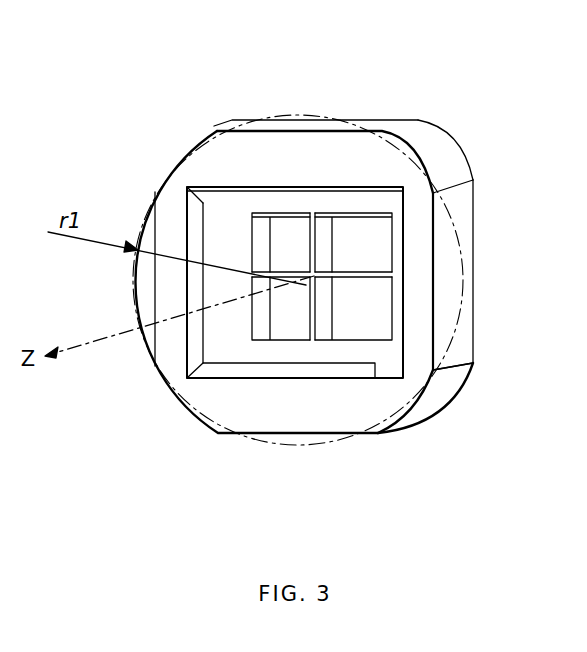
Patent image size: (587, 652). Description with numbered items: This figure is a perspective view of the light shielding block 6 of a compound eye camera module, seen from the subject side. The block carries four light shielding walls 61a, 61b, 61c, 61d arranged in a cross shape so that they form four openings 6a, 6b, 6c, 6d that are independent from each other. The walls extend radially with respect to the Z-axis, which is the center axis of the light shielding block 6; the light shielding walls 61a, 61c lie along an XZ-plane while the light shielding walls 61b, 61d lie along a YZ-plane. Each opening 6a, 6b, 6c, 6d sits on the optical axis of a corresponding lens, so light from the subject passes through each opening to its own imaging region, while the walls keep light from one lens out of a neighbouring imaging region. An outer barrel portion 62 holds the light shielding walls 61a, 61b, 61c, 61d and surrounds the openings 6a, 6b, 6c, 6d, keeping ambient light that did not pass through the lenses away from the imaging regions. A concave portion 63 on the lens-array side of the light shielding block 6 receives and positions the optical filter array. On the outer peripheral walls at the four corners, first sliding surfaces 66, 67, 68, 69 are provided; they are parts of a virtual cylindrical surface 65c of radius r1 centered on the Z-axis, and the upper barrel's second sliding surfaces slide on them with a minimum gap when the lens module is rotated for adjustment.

The light shielding block 6 is at (199, 77).
The first sliding surface 68 is at (192, 148).
The first sliding surface 69 is at (173, 402).
The virtual cylindrical surface 65c is at (130, 281).
The first sliding surface 66 is at (438, 145).
The first sliding surface 67 is at (438, 393).
The outer barrel portion 62 is at (434, 292).
The opening 6b is at (437, 368).
The light shielding wall 61a is at (382, 270).
The light shielding wall 61b is at (322, 310).
The light shielding wall 61c is at (287, 270).
The light shielding wall 61d is at (322, 231).
The opening 6a is at (373, 232).
The opening 6c is at (278, 245).
The opening 6d is at (287, 322).
The concave portion 63 is at (371, 323).